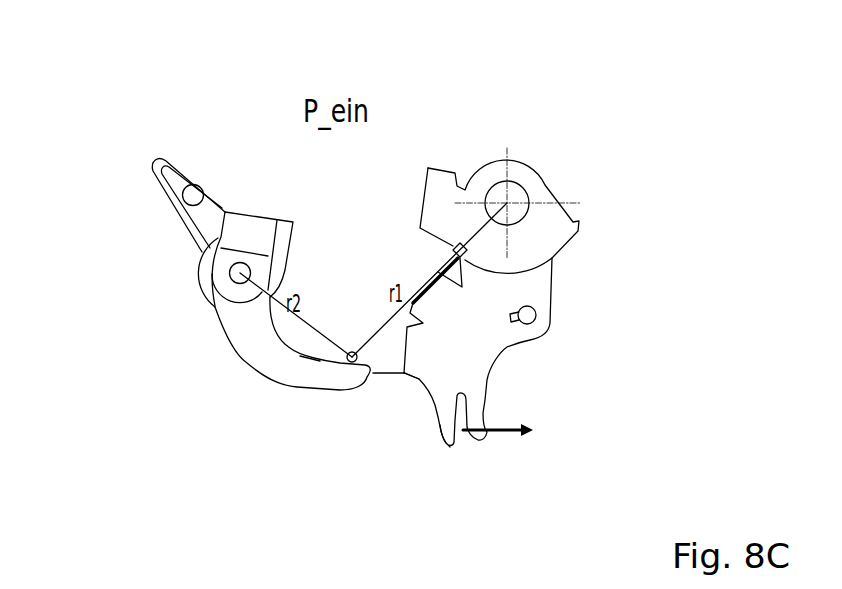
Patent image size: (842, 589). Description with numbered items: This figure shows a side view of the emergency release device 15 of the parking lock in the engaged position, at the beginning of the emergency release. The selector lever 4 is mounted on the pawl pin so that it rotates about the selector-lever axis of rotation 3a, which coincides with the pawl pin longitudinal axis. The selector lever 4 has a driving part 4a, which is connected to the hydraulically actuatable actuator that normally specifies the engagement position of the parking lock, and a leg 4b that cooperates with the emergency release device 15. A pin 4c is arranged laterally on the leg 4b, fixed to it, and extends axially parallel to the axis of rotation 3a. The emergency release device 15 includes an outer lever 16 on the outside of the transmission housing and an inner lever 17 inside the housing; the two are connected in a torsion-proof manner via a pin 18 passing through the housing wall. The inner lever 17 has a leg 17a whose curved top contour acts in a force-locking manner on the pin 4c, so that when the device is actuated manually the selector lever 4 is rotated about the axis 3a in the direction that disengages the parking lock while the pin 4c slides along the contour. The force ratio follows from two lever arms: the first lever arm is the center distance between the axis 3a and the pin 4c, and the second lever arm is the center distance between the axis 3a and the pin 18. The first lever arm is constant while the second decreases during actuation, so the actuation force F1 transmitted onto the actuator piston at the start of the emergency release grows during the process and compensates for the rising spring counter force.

The pawl pin longitudinal axis 3a is at (520, 247).
The selector lever 4 is at (480, 335).
The driving part 4a is at (449, 438).
The leg 4b is at (406, 356).
The pin 4c is at (353, 351).
The emergency release device 15 is at (190, 305).
The outer lever 16 is at (183, 178).
The inner lever 17 is at (232, 325).
The leg 17a is at (308, 352).
The pin 18 is at (240, 273).
The actuation force F1 is at (496, 430).